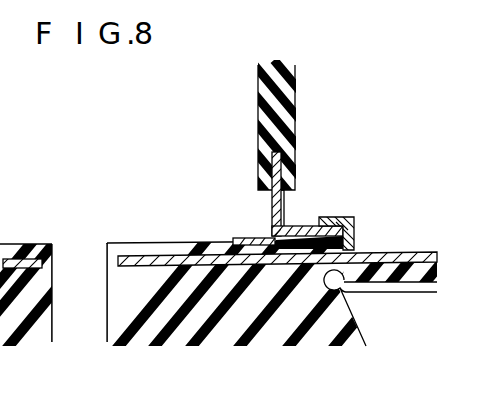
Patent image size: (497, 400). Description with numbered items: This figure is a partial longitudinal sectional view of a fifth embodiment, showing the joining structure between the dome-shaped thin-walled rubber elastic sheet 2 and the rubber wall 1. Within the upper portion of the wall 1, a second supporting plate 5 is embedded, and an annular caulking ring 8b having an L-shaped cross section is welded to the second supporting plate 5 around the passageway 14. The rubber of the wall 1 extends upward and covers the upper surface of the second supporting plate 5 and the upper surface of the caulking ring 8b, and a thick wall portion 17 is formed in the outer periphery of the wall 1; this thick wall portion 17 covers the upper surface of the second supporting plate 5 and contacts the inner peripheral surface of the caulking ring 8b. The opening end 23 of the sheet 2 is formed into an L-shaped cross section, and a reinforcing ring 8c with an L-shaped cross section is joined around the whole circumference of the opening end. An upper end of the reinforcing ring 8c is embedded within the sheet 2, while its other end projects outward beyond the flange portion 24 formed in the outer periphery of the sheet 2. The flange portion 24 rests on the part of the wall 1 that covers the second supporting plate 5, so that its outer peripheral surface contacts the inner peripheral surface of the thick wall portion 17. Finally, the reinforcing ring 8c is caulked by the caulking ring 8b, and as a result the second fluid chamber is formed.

The wall 1 is at (260, 302).
The sheet 2 is at (281, 103).
The second supporting plate 5 is at (420, 259).
The passageway 14 is at (78, 312).
The thick wall portion 17 is at (327, 233).
The opening end 23 is at (260, 190).
The flange portion 24 is at (270, 223).
The caulking ring 8b is at (356, 241).
The reinforcing ring 8c is at (285, 200).